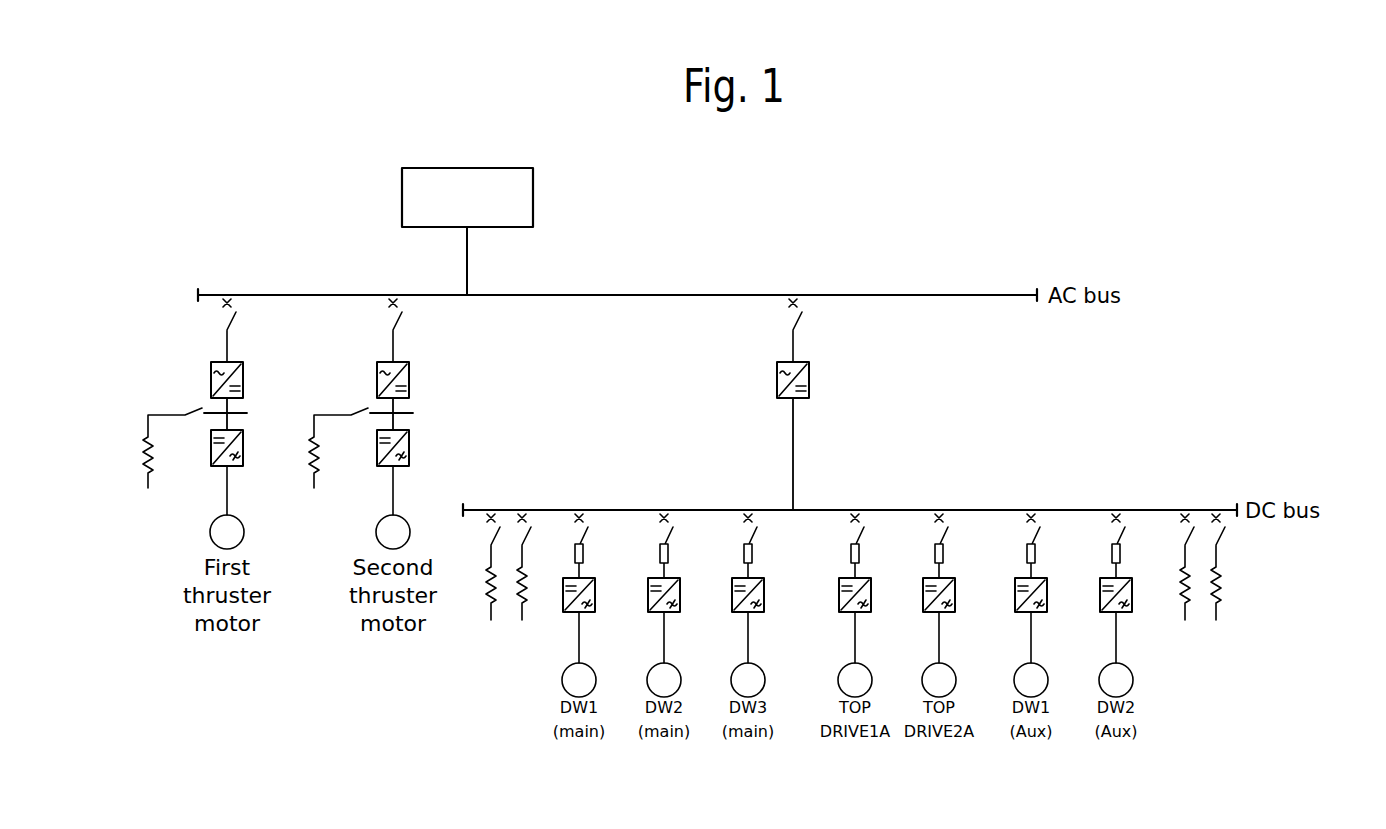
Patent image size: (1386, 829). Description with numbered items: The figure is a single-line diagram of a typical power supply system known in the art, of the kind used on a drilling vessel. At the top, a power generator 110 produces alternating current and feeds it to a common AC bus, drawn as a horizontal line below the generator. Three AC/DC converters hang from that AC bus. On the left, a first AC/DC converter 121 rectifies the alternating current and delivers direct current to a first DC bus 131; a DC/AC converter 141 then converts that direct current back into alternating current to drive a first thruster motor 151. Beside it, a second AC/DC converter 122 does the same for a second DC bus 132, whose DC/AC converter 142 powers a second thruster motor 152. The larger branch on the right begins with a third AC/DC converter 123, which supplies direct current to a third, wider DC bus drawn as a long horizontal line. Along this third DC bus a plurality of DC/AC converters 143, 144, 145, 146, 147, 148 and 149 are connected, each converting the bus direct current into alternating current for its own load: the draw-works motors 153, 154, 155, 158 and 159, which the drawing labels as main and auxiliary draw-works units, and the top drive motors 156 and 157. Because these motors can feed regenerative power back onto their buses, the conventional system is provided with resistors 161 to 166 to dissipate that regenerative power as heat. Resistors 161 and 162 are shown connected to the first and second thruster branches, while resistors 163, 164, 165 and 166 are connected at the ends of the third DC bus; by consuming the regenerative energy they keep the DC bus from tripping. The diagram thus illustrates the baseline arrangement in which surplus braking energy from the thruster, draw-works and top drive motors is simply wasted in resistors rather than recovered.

The power generator 110 is at (533, 195).
The first AC/DC converter 121 is at (247, 354).
The second AC/DC converter 122 is at (413, 354).
The third AC/DC converter 123 is at (817, 350).
The first DC bus 131 is at (238, 412).
The second DC bus 132 is at (404, 412).
The DC/AC converter 141 is at (243, 446).
The DC/AC converter 142 is at (409, 446).
The DC/AC converter 143 is at (603, 563).
The DC/AC converter 144 is at (688, 563).
The DC/AC converter 145 is at (772, 563).
The DC/AC converter 146 is at (879, 563).
The DC/AC converter 147 is at (963, 563).
The DC/AC converter 148 is at (1055, 563).
The DW2 auxiliary drive inverter with fuse 149 is at (1140, 563).
The first thruster motor 151 is at (245, 503).
The second thruster motor 152 is at (411, 503).
The draw-works motor 153 is at (600, 652).
The draw-works motor 154 is at (685, 652).
The draw-works motor 155 is at (769, 652).
The top drive motor 156 is at (876, 652).
The top drive motor 157 is at (960, 652).
The draw-works motor 158 is at (1052, 652).
The draw-works motor 159 is at (1137, 652).
The resistor 161 is at (154, 470).
The resistor 162 is at (320, 470).
The resistor 163 is at (487, 598).
The resistor 164 is at (524, 602).
The resistor 165 is at (1187, 602).
The resistor 166 is at (1228, 592).